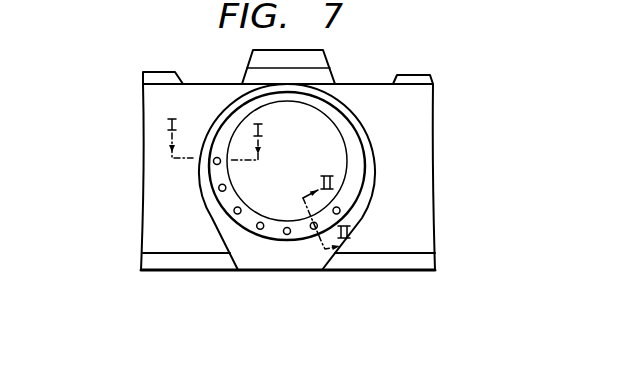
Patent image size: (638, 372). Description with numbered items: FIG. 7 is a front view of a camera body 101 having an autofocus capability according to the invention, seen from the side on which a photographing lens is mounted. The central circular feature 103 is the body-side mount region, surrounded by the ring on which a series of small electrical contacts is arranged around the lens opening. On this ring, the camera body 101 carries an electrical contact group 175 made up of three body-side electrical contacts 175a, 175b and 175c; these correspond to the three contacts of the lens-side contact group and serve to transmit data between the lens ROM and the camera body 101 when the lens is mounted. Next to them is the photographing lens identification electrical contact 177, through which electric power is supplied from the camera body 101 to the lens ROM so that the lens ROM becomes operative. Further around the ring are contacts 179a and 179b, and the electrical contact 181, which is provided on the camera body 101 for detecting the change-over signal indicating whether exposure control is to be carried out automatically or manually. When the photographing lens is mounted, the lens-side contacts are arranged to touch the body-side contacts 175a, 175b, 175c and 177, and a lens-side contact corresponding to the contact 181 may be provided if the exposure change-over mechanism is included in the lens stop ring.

The camera body 101 is at (437, 155).
The lens mount ring 103 is at (344, 123).
The electrical contact group 175 is at (72, 163).
The body-side electrical contact 175a is at (214, 163).
The body-side electrical contact 175b is at (219, 189).
The body-side electrical contact 175c is at (234, 212).
The photographing lens identification electrical contact 177 is at (340, 212).
The hole 179a is at (259, 230).
The hole 179b is at (288, 235).
The electrical contact 181 is at (313, 230).